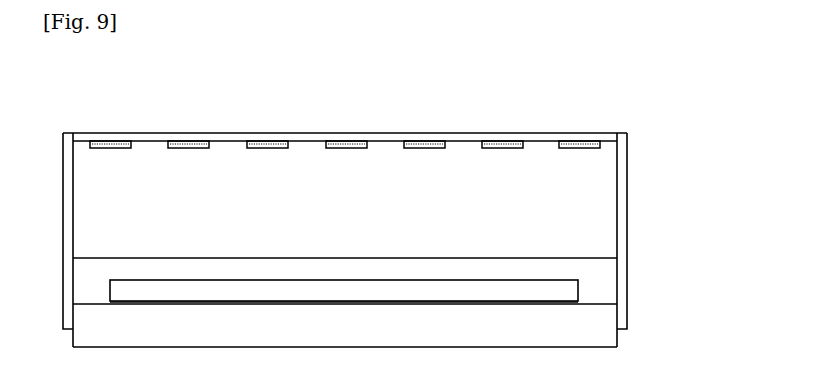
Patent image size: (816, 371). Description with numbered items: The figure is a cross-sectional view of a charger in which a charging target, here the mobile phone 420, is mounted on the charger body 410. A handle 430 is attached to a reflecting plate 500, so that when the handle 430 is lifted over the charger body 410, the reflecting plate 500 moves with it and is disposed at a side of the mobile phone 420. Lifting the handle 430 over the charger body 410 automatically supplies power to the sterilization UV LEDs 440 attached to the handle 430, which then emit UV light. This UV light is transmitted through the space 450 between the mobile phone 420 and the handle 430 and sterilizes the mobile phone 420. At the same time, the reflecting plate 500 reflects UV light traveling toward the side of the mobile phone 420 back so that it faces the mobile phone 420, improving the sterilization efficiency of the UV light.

The charger body 410 is at (575, 332).
The mobile phone 420 is at (578, 287).
The handle 430 is at (627, 175).
The sterilization UV LEDs 440 is at (498, 141).
The space 450 is at (368, 215).
The reflecting plate 500 is at (593, 273).